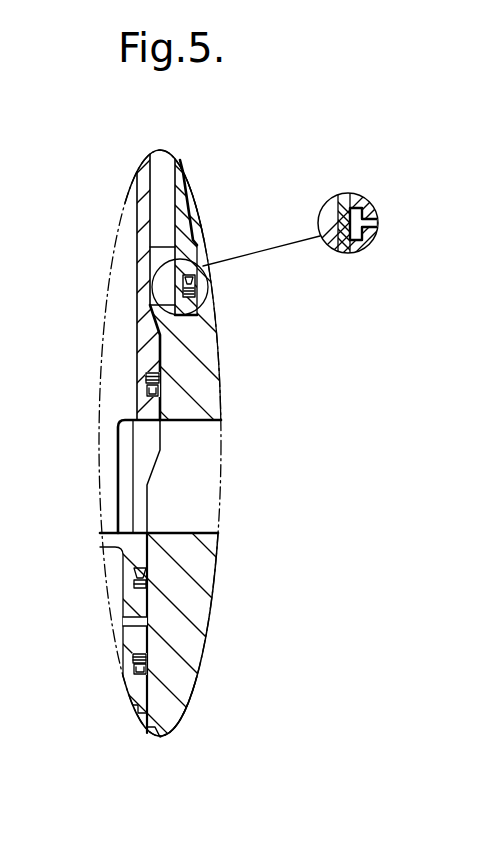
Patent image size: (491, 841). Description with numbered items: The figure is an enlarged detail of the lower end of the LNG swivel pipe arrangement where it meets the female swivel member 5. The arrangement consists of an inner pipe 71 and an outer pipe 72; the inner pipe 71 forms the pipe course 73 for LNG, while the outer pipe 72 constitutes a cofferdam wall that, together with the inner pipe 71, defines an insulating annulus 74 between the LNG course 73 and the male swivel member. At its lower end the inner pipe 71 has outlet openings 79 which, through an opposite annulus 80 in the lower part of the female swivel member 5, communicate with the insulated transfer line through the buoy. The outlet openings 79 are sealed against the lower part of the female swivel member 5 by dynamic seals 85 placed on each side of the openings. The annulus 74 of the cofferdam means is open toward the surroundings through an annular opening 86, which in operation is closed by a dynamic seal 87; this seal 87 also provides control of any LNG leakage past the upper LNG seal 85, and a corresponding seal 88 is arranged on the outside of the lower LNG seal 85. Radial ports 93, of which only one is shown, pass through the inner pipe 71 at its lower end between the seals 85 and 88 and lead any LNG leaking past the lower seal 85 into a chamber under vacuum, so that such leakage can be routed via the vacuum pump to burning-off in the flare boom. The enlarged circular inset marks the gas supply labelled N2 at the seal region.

The female swivel member 5 is at (175, 628).
The inner pipe 71 is at (146, 173).
The outer pipe 72 is at (186, 172).
The pipe course 73 is at (113, 250).
The insulating annulus 74 is at (162, 152).
The outlet openings 79 is at (122, 478).
The opposite annulus 80 is at (205, 482).
The dynamic seals 85 is at (159, 389).
The annular opening 86 is at (188, 332).
The dynamic seal 87 is at (195, 290).
The seal 88 is at (150, 668).
The radial ports 93 is at (128, 622).
The nitrogen gas supply N2 is at (385, 222).